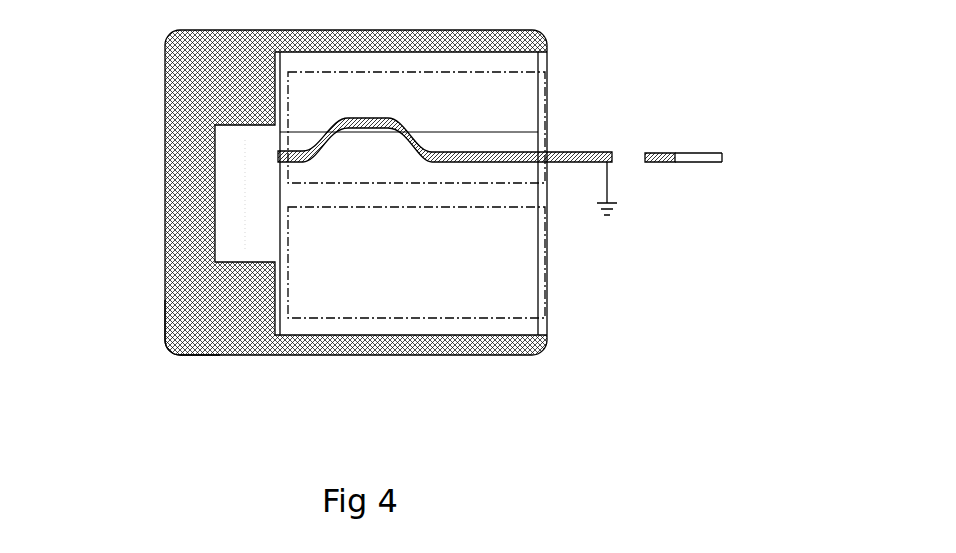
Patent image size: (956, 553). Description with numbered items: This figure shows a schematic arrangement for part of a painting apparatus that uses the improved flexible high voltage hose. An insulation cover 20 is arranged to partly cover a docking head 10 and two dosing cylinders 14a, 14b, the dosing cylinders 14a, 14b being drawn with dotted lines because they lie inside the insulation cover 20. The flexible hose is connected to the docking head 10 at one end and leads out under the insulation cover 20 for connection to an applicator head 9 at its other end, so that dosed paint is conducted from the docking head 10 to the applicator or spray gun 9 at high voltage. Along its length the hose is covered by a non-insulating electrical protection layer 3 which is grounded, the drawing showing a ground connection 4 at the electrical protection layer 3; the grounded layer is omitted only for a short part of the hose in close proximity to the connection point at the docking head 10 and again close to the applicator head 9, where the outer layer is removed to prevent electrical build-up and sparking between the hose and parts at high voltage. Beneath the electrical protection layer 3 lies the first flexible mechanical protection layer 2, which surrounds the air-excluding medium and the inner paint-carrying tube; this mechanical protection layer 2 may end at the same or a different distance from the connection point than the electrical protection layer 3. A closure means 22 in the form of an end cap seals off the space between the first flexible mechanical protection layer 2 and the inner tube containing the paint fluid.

The first flexible mechanical protection layer 2 is at (388, 138).
The electrical protection layer 3 is at (562, 163).
The ground connection 4 is at (612, 216).
The applicator head 9 is at (733, 187).
The docking head 10 is at (250, 242).
The dosing cylinder 14a is at (513, 65).
The dosing cylinder 14b is at (474, 322).
The insulation cover 20 is at (218, 377).
The closure means 22 is at (172, 353).